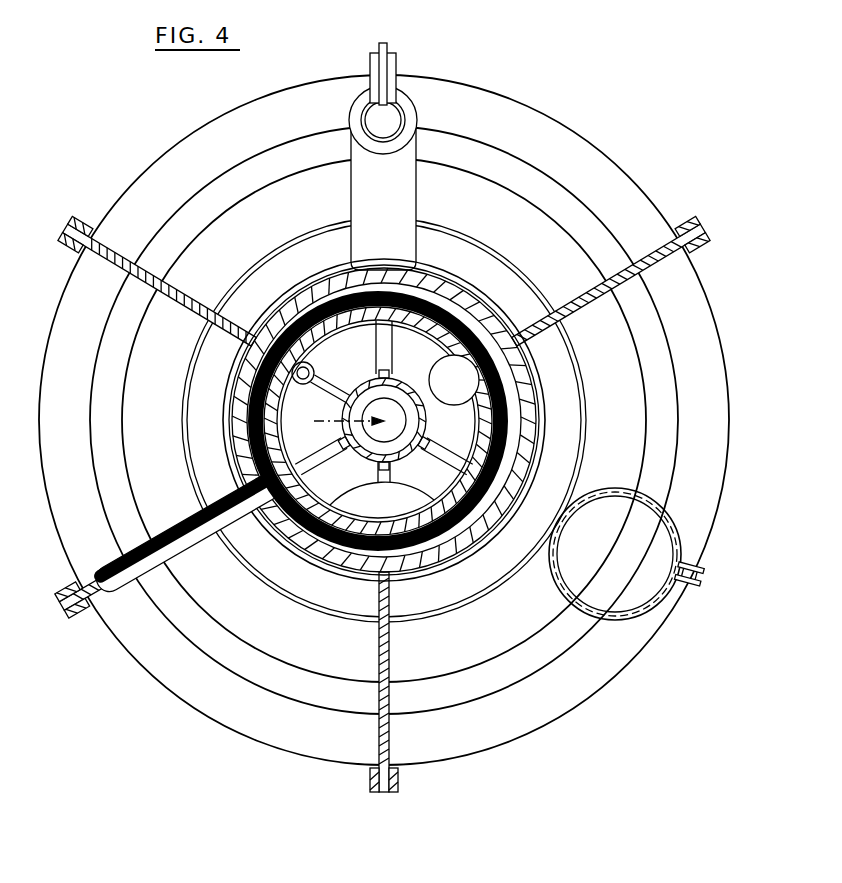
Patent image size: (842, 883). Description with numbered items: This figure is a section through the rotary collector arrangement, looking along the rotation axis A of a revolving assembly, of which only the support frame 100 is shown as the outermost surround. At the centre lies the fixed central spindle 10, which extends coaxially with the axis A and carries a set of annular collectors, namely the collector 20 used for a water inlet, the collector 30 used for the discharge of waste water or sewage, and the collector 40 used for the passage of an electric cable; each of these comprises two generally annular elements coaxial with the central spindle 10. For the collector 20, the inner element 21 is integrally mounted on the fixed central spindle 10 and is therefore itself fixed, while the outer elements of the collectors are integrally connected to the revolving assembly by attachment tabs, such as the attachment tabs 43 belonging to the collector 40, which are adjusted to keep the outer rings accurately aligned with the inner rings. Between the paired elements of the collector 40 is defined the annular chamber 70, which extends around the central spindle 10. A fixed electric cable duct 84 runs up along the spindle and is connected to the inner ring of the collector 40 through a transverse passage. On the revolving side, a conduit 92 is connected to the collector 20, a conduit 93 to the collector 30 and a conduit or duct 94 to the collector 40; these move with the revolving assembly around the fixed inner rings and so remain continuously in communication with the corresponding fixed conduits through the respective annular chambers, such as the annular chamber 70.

The fixed central spindle 10 is at (420, 423).
The collector 20 is at (320, 570).
The inner element of collector 20 21 is at (357, 525).
The collector 30 is at (640, 380).
The collector 40 is at (466, 286).
The attachment tabs 43 is at (107, 264).
The annular chamber 70 is at (494, 512).
The electric cable duct 84 is at (352, 376).
The conduit 92 is at (394, 117).
The conduit 93 is at (650, 572).
The conduit or duct 94 is at (124, 538).
The support frame 100 is at (711, 520).